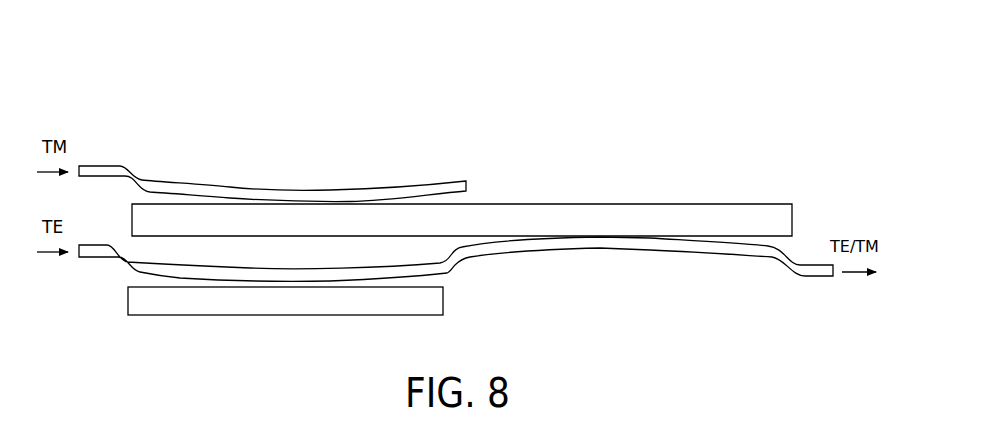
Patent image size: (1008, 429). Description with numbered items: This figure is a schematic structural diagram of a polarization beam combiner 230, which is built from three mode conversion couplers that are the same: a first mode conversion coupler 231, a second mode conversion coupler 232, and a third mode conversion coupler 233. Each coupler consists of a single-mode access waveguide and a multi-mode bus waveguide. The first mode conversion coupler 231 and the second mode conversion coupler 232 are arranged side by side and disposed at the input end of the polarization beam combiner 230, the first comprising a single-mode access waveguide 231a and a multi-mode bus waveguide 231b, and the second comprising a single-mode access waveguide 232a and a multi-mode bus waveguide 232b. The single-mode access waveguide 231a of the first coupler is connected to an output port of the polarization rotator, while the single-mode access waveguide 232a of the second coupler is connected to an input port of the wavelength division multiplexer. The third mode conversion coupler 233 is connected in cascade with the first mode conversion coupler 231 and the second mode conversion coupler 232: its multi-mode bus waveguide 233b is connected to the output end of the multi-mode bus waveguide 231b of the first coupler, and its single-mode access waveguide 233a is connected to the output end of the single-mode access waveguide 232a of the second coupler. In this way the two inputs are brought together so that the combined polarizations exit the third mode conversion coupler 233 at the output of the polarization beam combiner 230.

The polarization beam combiner 230 is at (444, 147).
The first mode conversion coupler 231 is at (256, 148).
The single-mode access waveguide 231a is at (142, 181).
The multi-mode bus waveguide 231b is at (180, 217).
The second mode conversion coupler 232 is at (178, 345).
The single-mode access waveguide 232a is at (173, 270).
The multi-mode bus waveguide 232b is at (243, 300).
The third mode conversion coupler 233 is at (717, 299).
The single-mode access waveguide 233a is at (763, 254).
The multi-mode bus waveguide 233b is at (708, 227).